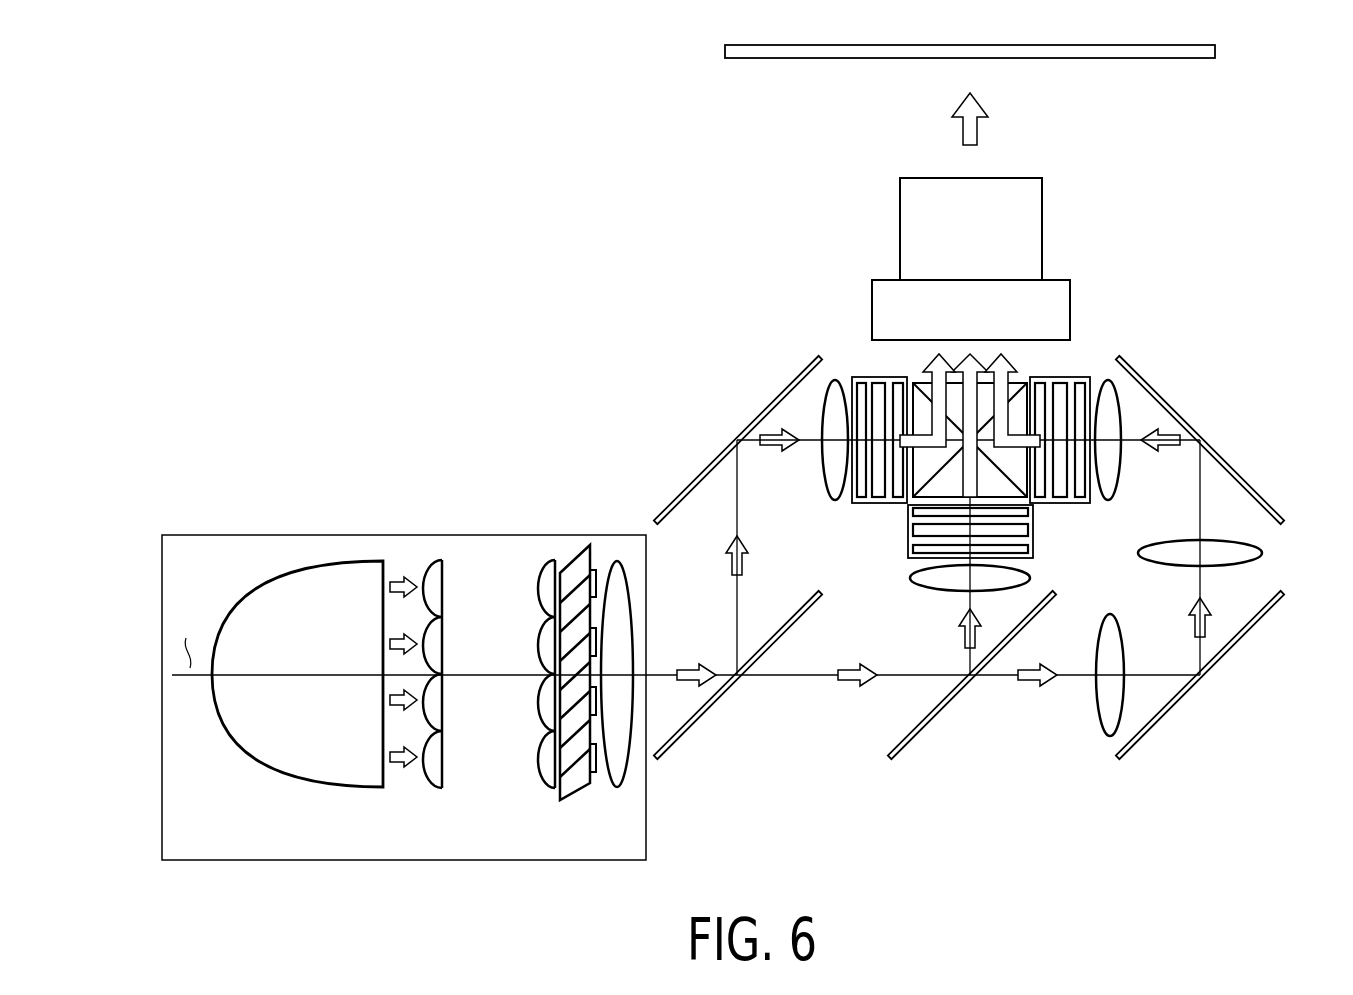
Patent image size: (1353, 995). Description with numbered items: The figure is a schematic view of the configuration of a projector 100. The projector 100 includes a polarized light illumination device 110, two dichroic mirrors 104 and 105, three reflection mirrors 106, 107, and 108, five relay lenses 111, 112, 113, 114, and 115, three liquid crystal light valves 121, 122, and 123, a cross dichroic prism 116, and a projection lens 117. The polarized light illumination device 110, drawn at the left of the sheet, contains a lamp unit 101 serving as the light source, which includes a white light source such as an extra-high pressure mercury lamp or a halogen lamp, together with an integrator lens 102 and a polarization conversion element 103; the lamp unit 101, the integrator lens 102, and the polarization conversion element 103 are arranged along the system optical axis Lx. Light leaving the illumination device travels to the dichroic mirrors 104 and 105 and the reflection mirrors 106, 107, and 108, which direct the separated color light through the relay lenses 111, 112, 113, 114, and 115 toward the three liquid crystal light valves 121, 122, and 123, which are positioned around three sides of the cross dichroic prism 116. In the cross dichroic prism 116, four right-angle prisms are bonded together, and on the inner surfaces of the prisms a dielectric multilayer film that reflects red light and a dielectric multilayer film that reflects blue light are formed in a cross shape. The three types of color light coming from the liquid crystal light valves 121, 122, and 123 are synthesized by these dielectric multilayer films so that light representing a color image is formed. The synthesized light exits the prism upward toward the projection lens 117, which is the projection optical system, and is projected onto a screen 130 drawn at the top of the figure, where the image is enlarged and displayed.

The projector 100 is at (1257, 140).
The lamp unit 101 is at (297, 770).
The integrator lens 102 is at (433, 793).
The polarization conversion element 103 is at (634, 803).
The dichroic mirror 104 is at (700, 722).
The dichroic mirror 105 is at (935, 722).
The reflection mirror 106 is at (733, 430).
The reflection mirror 107 is at (1163, 722).
The reflection mirror 108 is at (1201, 430).
The polarized light illumination device 110 is at (417, 533).
The relay lens 111 is at (1108, 740).
The relay lens 112 is at (1262, 550).
The relay lens 113 is at (1108, 502).
The relay lens 114 is at (908, 590).
The relay lens 115 is at (835, 502).
The cross dichroic prism 116 is at (1032, 352).
The projection lens 117 is at (1030, 227).
The liquid crystal light valve 121 is at (855, 352).
The liquid crystal light valve 122 is at (1035, 550).
The liquid crystal light valve 123 is at (1087, 352).
The screen 130 is at (1135, 60).